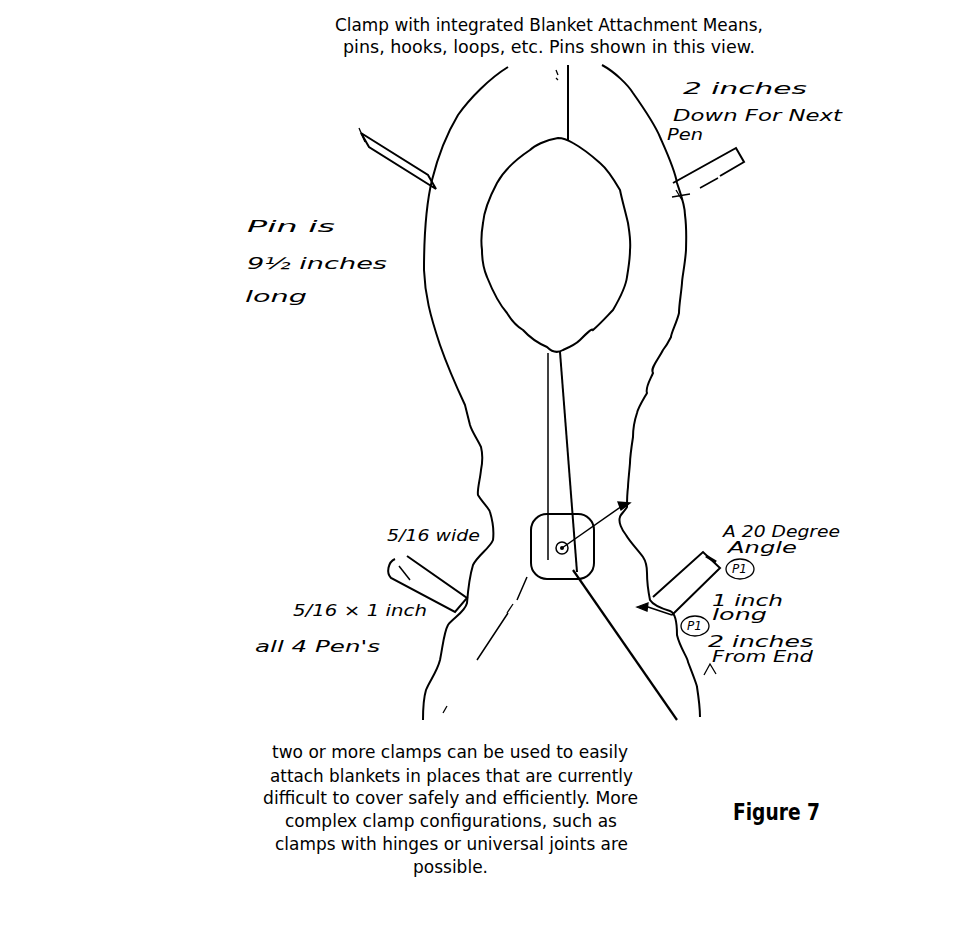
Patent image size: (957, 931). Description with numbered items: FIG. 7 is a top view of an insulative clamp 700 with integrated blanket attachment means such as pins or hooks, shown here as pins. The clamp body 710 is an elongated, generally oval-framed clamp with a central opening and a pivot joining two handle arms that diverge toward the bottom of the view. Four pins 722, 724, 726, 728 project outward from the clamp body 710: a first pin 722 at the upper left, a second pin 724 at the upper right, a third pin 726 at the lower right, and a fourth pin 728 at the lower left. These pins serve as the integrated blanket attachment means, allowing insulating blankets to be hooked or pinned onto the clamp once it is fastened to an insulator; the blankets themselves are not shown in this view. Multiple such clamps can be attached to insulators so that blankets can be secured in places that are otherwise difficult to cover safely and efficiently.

The clamp with integrated blanket attachment means 700 is at (160, 82).
The clamp body 710 is at (683, 278).
The pin (upper left) 722 is at (357, 145).
The pin (upper right) 724 is at (743, 163).
The pin (lower right) 726 is at (702, 548).
The pin (lower left) 728 is at (397, 562).